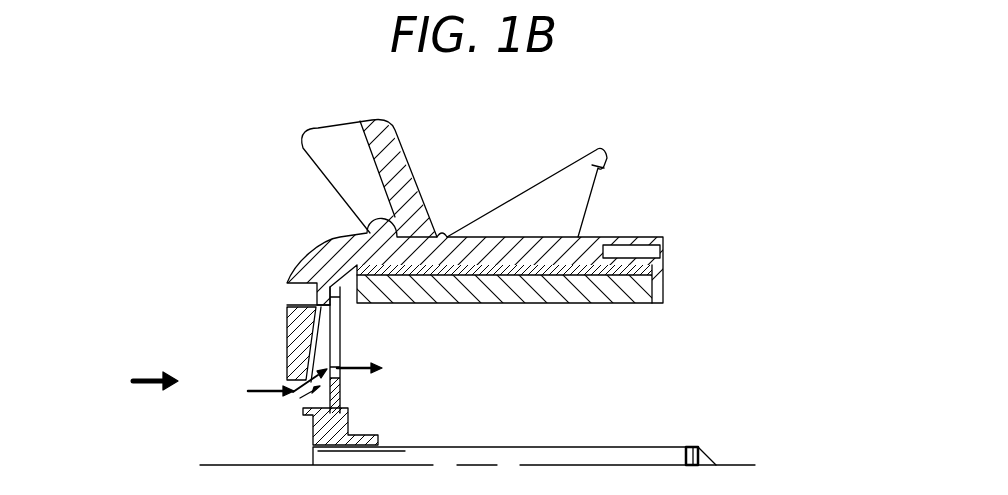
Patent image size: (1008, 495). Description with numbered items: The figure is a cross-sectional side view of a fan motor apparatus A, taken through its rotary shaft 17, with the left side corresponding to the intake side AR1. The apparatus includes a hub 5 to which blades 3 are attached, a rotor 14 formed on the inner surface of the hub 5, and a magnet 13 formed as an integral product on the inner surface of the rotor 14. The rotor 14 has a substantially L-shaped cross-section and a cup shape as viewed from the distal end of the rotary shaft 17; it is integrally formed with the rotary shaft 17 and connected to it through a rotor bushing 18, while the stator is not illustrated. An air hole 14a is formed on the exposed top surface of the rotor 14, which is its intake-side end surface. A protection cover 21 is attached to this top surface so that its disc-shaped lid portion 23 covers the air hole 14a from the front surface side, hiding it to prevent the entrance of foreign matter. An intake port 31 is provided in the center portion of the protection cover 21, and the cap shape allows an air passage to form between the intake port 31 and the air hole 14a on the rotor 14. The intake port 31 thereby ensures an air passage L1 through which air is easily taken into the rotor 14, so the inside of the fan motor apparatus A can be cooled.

The blades 3 is at (584, 148).
The hub 5 is at (628, 244).
The magnet 13 is at (640, 300).
The rotor 14 is at (612, 282).
The air hole 14a is at (343, 322).
The rotary shaft 17 is at (664, 446).
The rotor bushing 18 is at (350, 418).
The protection cover 21 is at (273, 354).
The lid portion 23 is at (286, 322).
The intake port 31 is at (292, 402).
The fan motor apparatus A is at (783, 200).
The intake side AR1 is at (142, 377).
The air passage L1 is at (258, 388).